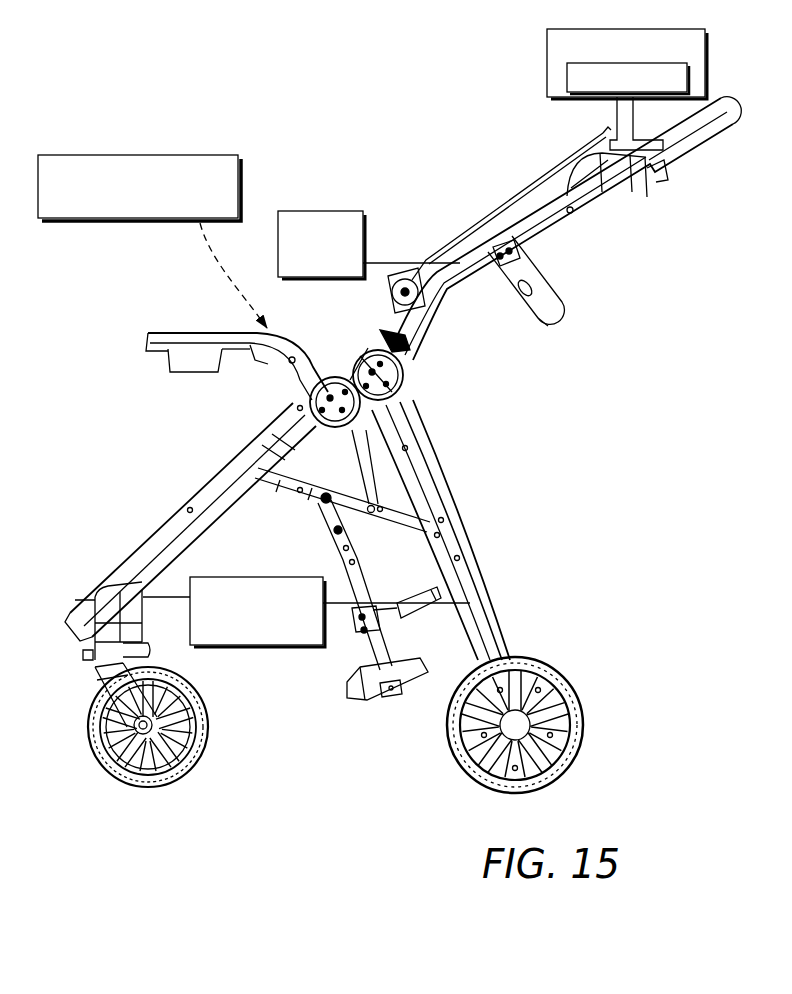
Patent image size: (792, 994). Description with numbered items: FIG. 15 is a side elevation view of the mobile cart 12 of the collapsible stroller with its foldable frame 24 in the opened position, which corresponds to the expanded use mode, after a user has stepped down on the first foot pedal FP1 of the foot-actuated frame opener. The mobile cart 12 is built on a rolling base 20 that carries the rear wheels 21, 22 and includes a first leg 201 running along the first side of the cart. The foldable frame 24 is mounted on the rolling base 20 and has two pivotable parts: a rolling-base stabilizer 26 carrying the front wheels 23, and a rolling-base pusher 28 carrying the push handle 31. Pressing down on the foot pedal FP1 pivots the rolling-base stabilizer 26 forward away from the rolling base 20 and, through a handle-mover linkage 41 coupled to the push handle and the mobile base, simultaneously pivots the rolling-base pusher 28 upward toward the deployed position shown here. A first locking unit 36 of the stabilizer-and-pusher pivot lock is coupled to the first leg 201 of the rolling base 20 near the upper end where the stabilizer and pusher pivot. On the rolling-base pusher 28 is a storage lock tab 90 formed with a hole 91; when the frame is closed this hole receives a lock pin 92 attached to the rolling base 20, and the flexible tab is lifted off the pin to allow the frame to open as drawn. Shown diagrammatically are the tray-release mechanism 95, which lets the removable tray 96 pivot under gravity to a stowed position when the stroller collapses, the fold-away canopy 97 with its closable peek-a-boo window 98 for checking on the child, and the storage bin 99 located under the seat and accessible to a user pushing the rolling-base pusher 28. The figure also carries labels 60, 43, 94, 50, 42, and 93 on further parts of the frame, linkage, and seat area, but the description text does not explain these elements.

The foldable frame 24 is at (50, 474).
The tray-release mechanism 95 is at (128, 155).
The removable tray 96 is at (225, 332).
The tray arm 60 is at (290, 392).
The front leg tube 43 is at (279, 460).
The rolling-base stabilizer 26 is at (178, 568).
The front wheels 23 is at (102, 774).
The storage bin 99 is at (250, 578).
The brake bar 94 is at (408, 586).
The brake linkage 50 is at (391, 644).
The first foot pedal FP1 is at (357, 697).
The rear wheel 21 is at (467, 736).
The rear wheel 22 is at (465, 781).
The mobile cart 12 is at (495, 530).
The first leg 201 is at (494, 600).
The rolling base 20 is at (495, 530).
The lock pin 92 is at (465, 540).
The cross link 42 is at (402, 504).
The handle-mover linkage 41 is at (376, 476).
The first locking unit 36 is at (408, 396).
The storage lock tab 90 is at (562, 280).
The hole 91 is at (534, 316).
The push handle 31 is at (716, 138).
The rolling-base pusher 28 is at (526, 210).
The seat pad 93 is at (330, 211).
The fold-away canopy 97 is at (545, 52).
The closable peek-a-boo window 98 is at (690, 80).